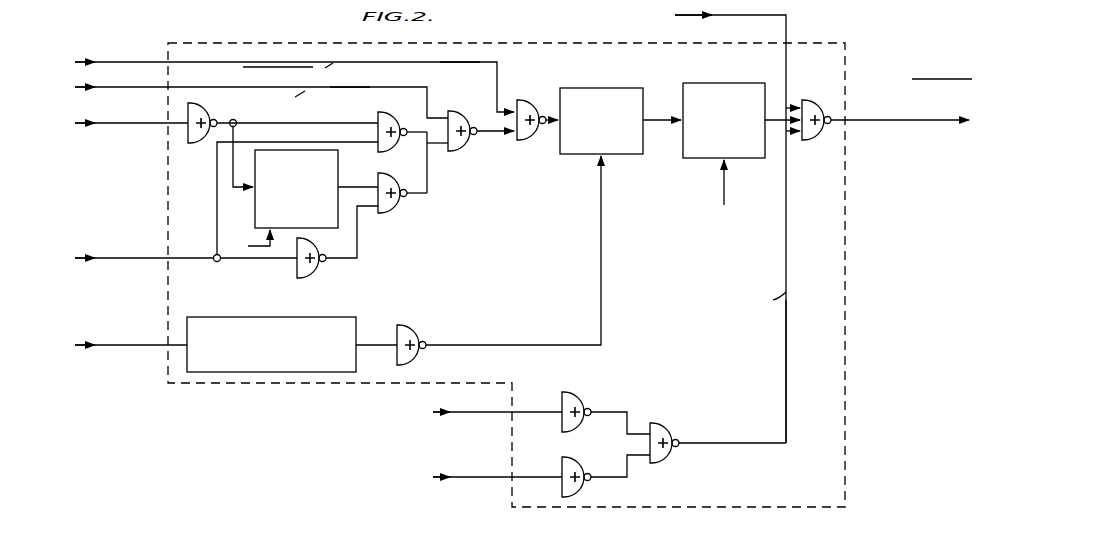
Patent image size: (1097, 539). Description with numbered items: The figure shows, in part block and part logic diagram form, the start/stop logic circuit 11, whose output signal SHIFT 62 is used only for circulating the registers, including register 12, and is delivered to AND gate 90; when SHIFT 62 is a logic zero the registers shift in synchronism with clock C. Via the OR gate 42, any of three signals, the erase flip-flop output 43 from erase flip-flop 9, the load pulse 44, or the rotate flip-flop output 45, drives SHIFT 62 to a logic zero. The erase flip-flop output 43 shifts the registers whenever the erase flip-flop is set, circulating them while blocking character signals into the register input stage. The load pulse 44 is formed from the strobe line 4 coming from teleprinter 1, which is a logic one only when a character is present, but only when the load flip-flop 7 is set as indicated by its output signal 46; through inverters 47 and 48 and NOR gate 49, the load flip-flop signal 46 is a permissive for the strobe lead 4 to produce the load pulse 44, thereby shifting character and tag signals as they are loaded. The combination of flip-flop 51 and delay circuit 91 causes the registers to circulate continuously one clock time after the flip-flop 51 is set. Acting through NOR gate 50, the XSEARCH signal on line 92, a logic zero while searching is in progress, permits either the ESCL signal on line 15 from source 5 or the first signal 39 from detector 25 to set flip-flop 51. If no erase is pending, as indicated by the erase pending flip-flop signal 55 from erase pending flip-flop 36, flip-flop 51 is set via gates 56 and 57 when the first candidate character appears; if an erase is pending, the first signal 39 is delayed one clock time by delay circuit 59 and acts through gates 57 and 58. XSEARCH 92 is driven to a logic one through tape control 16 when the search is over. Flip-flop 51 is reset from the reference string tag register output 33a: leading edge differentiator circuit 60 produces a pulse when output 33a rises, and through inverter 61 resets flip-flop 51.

The start/stop logic circuit 11 is at (214, 42).
The tape control 16 is at (125, 62).
The source of ESCL signal 5 is at (116, 87).
The ESCL signal line 15 is at (345, 94).
The XSEARCH signal line 92 is at (462, 65).
The first signal 39 is at (146, 126).
The detector 25 is at (98, 153).
The erase pending flip-flop signal 55 is at (133, 263).
The erase pending flip flop 36 is at (92, 290).
The delay circuit 59 is at (255, 200).
The gate 56 is at (397, 114).
The gate 58 is at (399, 211).
The gate 57 is at (459, 152).
The NOR logic gate 50 is at (522, 102).
The flip-flop 51 is at (594, 86).
The delay circuit 91 is at (725, 82).
The rotate flip-flop output 45 is at (776, 124).
The erase flip-flop output 43 is at (790, 21).
The erase flip flop 9 is at (617, 17).
The OR gate 42 is at (810, 105).
The SHIFT output signal 62 is at (892, 118).
The AND gate 90 is at (930, 122).
The load pulse 44 is at (790, 315).
The leading edge differentiator circuit 60 is at (249, 316).
The reference string tag register output 33a is at (152, 345).
The register 12 is at (92, 383).
The inverter 61 is at (407, 328).
The load flip-flop output signal 46 is at (481, 414).
The flip-flop 7 is at (335, 413).
The strobe line 4 is at (480, 480).
The teleprinter 1 is at (325, 478).
The inverter 47 is at (571, 396).
The inverter 48 is at (575, 468).
The NOR gate 49 is at (663, 428).